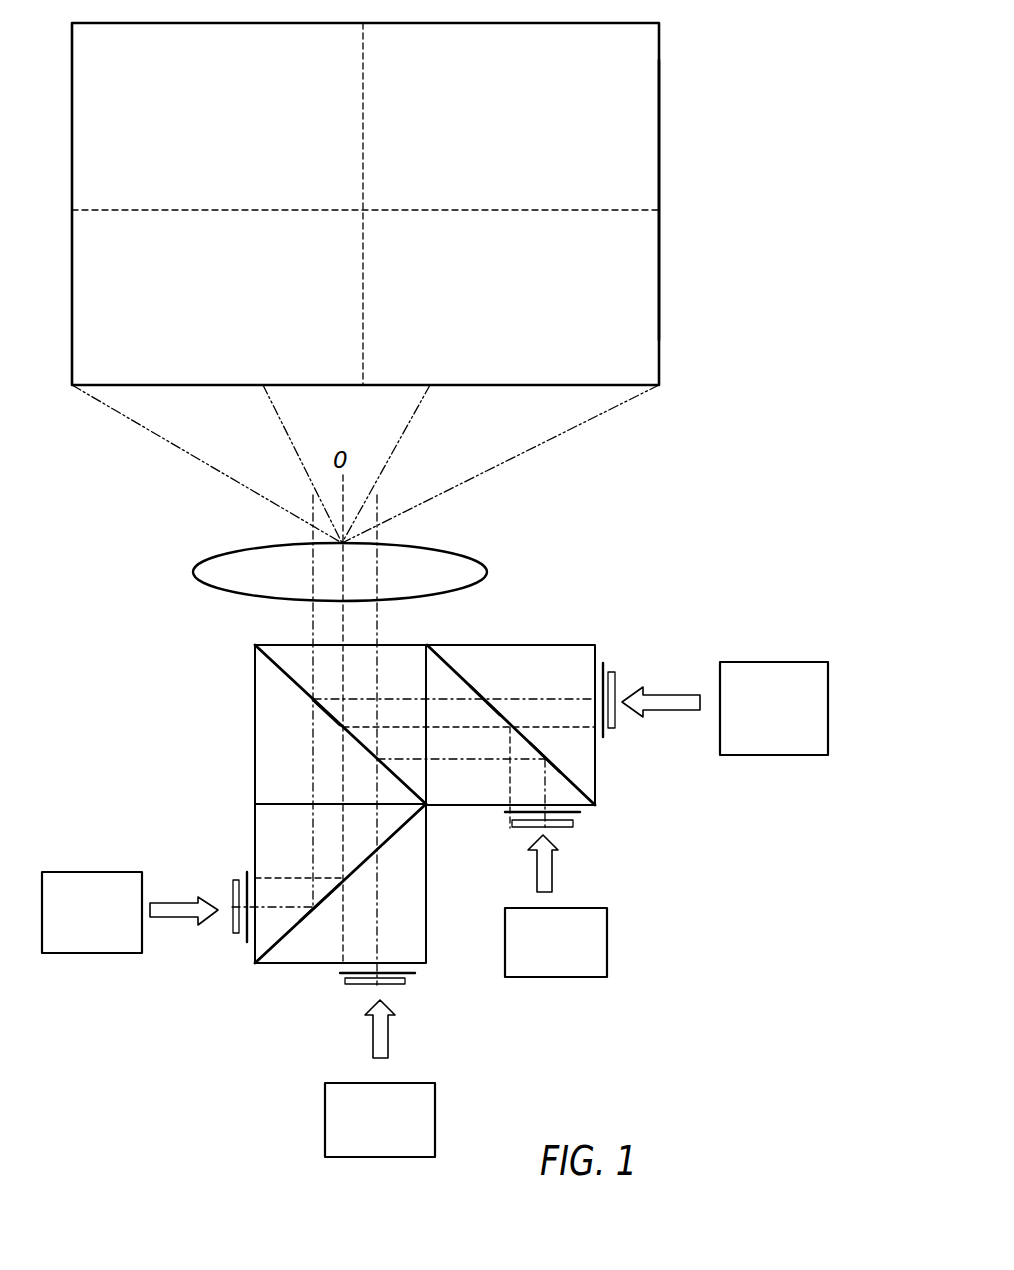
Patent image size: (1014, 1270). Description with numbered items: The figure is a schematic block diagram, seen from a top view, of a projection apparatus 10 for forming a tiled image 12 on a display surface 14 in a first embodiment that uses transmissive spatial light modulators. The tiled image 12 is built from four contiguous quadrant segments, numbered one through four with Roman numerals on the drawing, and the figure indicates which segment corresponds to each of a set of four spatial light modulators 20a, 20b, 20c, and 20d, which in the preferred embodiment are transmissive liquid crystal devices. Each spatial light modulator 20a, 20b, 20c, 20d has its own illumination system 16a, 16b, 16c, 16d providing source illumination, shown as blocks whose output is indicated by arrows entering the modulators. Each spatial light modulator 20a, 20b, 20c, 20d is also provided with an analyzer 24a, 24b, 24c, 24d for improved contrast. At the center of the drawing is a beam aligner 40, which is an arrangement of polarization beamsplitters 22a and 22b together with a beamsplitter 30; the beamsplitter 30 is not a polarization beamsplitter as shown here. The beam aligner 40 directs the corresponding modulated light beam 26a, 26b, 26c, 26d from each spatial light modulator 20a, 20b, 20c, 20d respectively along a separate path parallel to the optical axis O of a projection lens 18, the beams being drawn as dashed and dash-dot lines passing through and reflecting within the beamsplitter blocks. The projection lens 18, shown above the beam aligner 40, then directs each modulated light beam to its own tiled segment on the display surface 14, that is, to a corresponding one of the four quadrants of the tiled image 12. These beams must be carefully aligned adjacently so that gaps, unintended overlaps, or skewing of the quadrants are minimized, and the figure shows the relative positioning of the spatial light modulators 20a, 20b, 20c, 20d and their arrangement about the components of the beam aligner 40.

The projection apparatus 10 is at (146, 658).
The tiled image 12 is at (659, 282).
The display surface 14 is at (659, 150).
The illumination system 16a is at (325, 1120).
The illumination system 16b is at (66, 870).
The illumination system 16c is at (607, 935).
The illumination system 16d is at (780, 660).
The projection lens 18 is at (447, 552).
The spatial light modulator 20a is at (408, 983).
The spatial light modulator 20b is at (233, 930).
The spatial light modulator 20c is at (575, 825).
The spatial light modulator 20d is at (617, 672).
The polarization beamsplitter 22a is at (258, 965).
The polarization beamsplitter 22b is at (530, 643).
The analyzer 24a is at (410, 973).
The analyzer 24b is at (242, 940).
The analyzer 24c is at (510, 817).
The analyzer 24d is at (603, 663).
The modulated light beam 26a is at (358, 942).
The modulated light beam 26b is at (325, 853).
The modulated light beam 26c is at (538, 785).
The modulated light beam 26d is at (553, 707).
The beamsplitter 30 is at (258, 710).
The beam aligner 40 is at (252, 650).